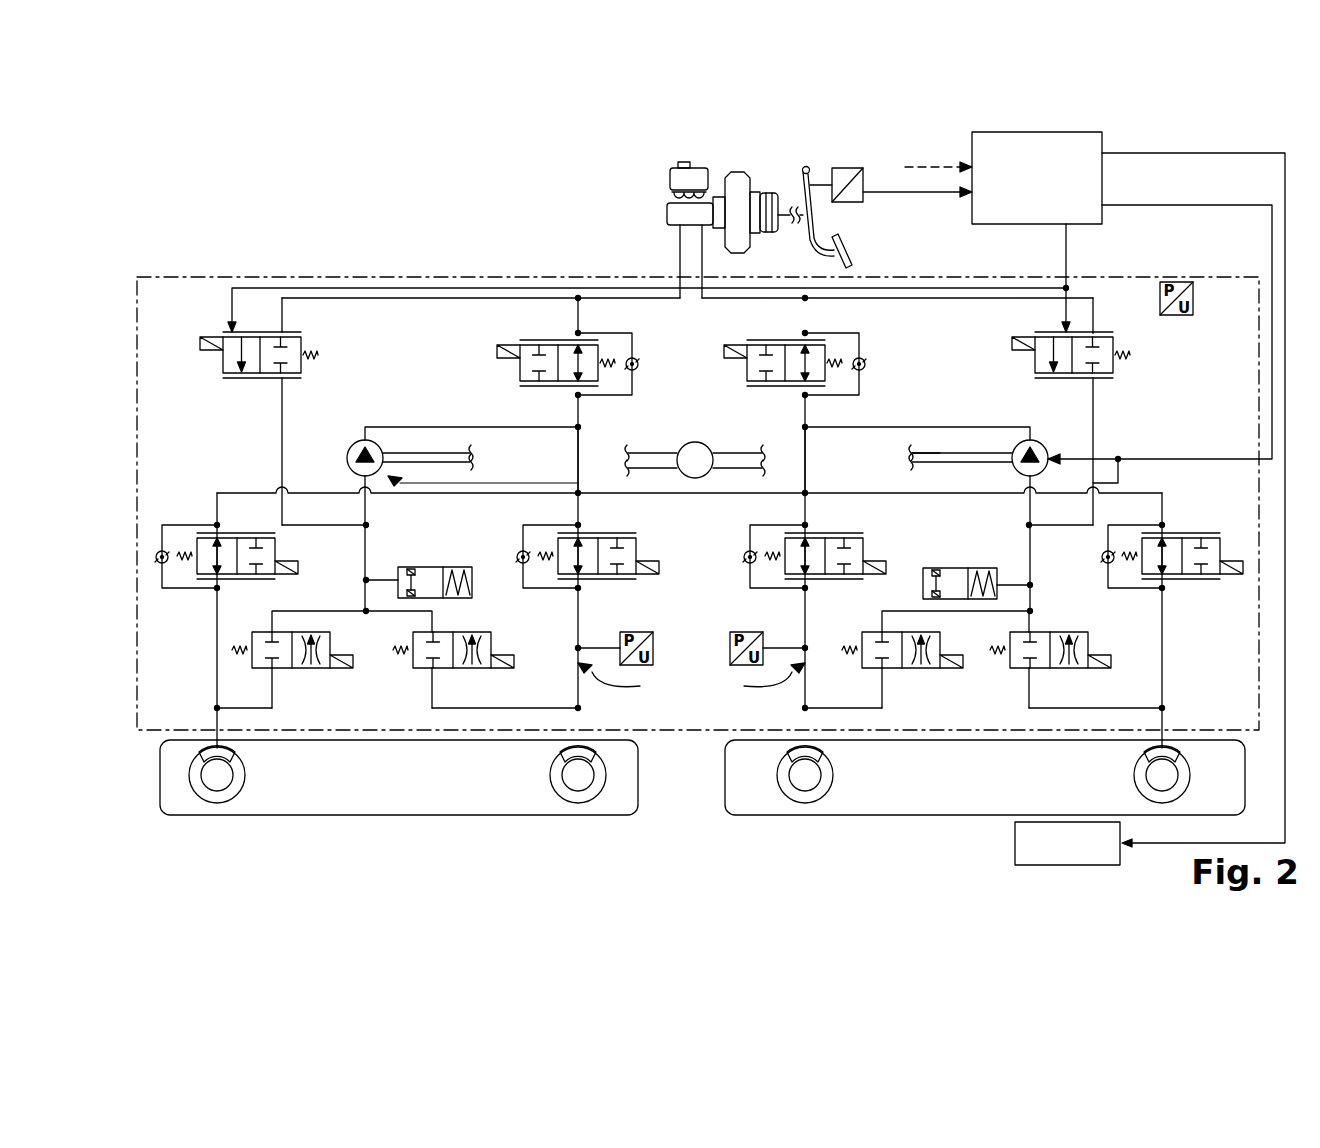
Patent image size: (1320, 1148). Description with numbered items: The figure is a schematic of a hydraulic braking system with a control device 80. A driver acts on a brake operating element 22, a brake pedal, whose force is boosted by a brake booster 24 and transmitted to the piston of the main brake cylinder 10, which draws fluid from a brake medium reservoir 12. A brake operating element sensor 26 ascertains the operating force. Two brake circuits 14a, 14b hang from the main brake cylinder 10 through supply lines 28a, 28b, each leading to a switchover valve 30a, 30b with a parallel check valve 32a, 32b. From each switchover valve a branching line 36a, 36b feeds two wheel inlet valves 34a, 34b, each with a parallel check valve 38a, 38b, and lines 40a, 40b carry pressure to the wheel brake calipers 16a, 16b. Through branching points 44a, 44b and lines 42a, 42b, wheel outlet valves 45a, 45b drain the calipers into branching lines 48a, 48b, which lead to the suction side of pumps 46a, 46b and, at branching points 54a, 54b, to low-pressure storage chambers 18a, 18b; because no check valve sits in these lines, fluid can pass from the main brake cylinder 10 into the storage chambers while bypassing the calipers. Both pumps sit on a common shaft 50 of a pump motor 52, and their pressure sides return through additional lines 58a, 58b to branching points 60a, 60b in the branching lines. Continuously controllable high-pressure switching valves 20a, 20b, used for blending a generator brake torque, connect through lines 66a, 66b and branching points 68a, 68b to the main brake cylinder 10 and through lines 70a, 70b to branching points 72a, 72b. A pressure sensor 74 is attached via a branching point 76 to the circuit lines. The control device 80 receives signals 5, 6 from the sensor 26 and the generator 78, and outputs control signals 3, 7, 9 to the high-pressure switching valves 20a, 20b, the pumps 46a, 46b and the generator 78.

The control signal 3 is at (392, 288).
The signal 5 is at (907, 196).
The signal 6 is at (917, 163).
The control signal 7 is at (1214, 153).
The control signal 9 is at (1192, 206).
The main brake cylinder 10 is at (682, 220).
The brake medium reservoir 12 is at (682, 177).
The brake circuit 14a is at (752, 551).
The brake circuit 14b is at (630, 551).
The wheel brake caliper 16a is at (815, 755).
The wheel brake caliper 16b is at (234, 755).
The storage chamber 18a is at (941, 568).
The storage chamber 18b is at (450, 567).
The high-pressure switching valve 20a is at (1113, 378).
The high-pressure switching valve 20b is at (233, 378).
The brake operating element 22 is at (824, 212).
The brake booster 24 is at (747, 238).
The brake operating element sensor 26 is at (847, 168).
The supply line 28a is at (710, 302).
The supply line 28b is at (632, 298).
The switchover valve 30a is at (786, 341).
The switchover valve 30b is at (520, 380).
The check valve 32a is at (866, 360).
The check valve 32b is at (640, 368).
The wheel inlet valve 34a is at (827, 538).
The wheel inlet valve 34b is at (245, 581).
The branching line 36a is at (805, 459).
The branching line 36b is at (578, 452).
The check valve 38a is at (744, 553).
The check valve 38b is at (156, 557).
The line 40a is at (805, 622).
The line 40b is at (217, 661).
The line 42a is at (987, 663).
The line 42b is at (389, 663).
The branching point 44a is at (805, 709).
The branching point 44b is at (217, 708).
The wheel outlet valve 45a is at (928, 638).
The wheel outlet valve 45b is at (413, 638).
The pump 46a is at (1042, 450).
The pump 46b is at (352, 450).
The branching line 48a is at (1030, 541).
The branching line 48b is at (366, 541).
The common shaft 50 is at (397, 450).
The pump motor 52 is at (710, 446).
The branching point 54a is at (1030, 585).
The branching point 54b is at (366, 580).
The additional line 58a is at (925, 444).
The additional line 58b is at (696, 424).
The branching point 60a is at (805, 430).
The branching point 60b is at (578, 428).
The line 66a is at (1087, 370).
The line 66b is at (283, 370).
The branching point 68a is at (1090, 300).
The branching point 68b is at (578, 298).
The line 70a is at (1093, 440).
The line 70b is at (282, 443).
The branching point 72a is at (1028, 525).
The branching point 72b is at (364, 528).
The pressure sensor 74 is at (648, 632).
The branching point 76 is at (578, 648).
The generator 78 is at (1015, 847).
The control device 80 is at (1102, 139).